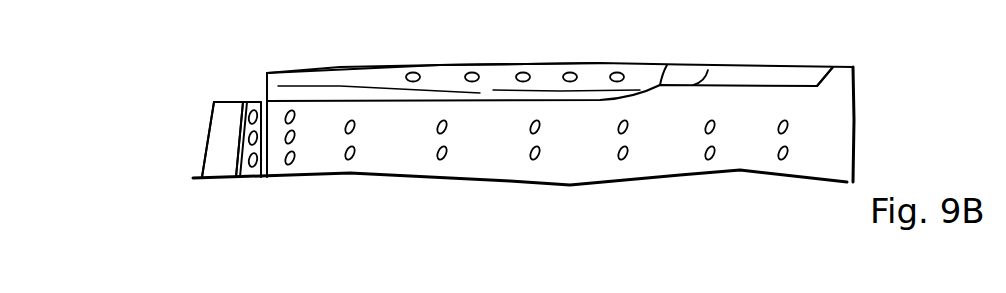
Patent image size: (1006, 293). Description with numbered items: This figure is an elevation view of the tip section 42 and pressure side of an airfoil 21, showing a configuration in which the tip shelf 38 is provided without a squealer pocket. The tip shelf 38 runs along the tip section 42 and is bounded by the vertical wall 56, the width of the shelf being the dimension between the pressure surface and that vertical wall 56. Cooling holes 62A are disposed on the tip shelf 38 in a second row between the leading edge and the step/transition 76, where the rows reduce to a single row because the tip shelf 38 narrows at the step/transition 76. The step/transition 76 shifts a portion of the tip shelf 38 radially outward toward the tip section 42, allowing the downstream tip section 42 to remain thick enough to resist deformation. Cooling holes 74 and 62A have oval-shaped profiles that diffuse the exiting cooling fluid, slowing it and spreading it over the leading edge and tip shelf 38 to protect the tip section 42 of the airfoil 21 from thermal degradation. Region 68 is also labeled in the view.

The airfoil 21 is at (877, 93).
The tip shelf 38 is at (482, 100).
The tip section 42 is at (180, 55).
The vertical wall 56 is at (807, 80).
The cooling holes 62A is at (411, 73).
The side panel 68 is at (233, 100).
The cooling holes 74 is at (293, 161).
The step/transition 76 is at (667, 65).